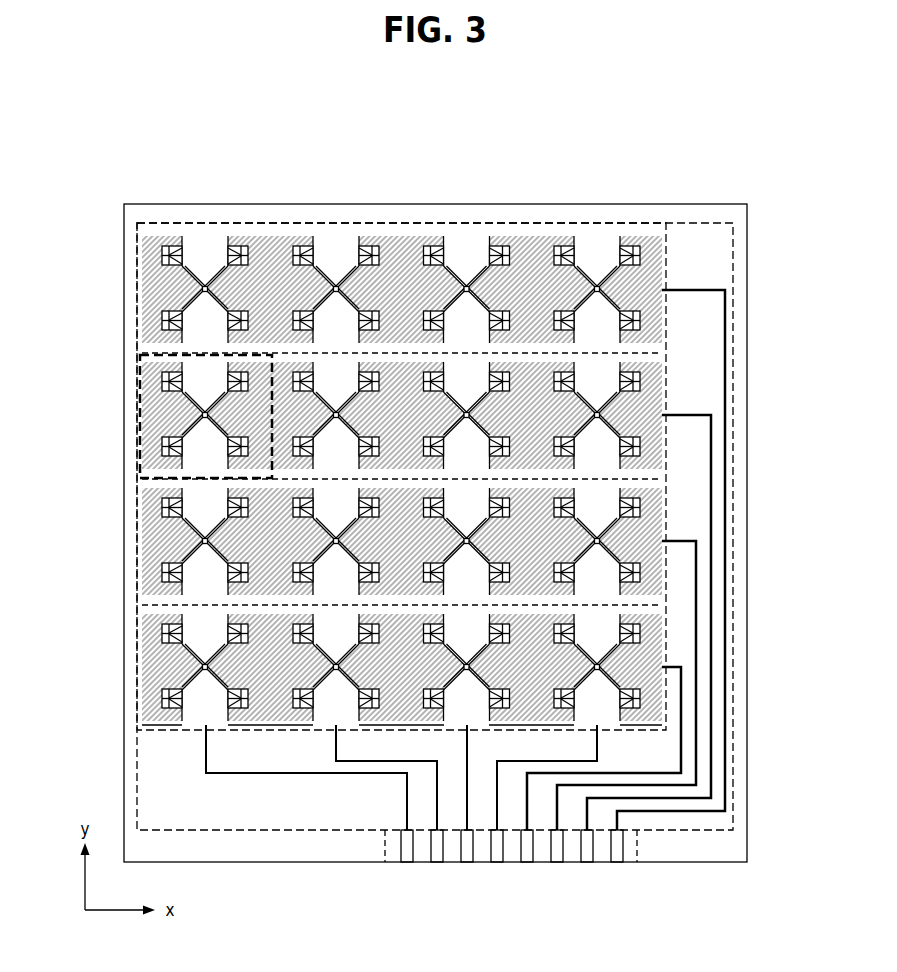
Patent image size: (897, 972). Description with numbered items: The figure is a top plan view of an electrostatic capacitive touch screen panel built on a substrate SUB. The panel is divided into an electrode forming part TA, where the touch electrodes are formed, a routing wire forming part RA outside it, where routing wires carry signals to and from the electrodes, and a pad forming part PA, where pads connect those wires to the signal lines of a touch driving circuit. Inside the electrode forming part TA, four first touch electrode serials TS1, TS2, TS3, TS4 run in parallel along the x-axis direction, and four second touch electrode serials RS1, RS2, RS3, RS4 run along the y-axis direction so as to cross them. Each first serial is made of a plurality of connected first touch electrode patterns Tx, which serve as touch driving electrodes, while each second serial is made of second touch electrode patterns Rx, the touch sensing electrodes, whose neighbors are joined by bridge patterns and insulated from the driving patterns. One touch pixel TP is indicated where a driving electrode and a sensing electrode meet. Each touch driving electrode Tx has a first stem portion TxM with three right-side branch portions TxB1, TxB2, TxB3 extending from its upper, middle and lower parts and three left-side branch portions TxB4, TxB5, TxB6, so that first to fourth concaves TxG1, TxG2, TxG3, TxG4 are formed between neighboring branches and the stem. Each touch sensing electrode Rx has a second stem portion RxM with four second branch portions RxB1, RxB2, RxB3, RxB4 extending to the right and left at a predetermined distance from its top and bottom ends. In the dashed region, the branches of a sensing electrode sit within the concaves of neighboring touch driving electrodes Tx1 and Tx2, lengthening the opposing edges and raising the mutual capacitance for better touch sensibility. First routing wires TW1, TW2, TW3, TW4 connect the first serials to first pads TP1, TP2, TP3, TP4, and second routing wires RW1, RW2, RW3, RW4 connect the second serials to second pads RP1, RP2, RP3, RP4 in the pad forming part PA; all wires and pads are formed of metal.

The substrate SUB is at (305, 863).
The routing wire forming part RA is at (707, 222).
The electrode forming part TA is at (660, 222).
The pad forming part PA is at (645, 848).
The first touch electrode pattern Tx is at (456, 397).
The second touch electrode pattern Rx is at (217, 237).
The first touch electrode serial TS1 is at (135, 266).
The first touch electrode serial TS2 is at (135, 377).
The first touch electrode serial TS3 is at (135, 521).
The first touch electrode serial TS4 is at (135, 643).
The second touch electrode serial RS1 is at (195, 222).
The second touch electrode serial RS2 is at (322, 222).
The second touch electrode serial RS3 is at (482, 222).
The second touch electrode serial RS4 is at (586, 222).
The touch pixel TP is at (556, 247).
The first stem portion TxM is at (402, 288).
The 1-1 branch portion TxB1 is at (438, 255).
The 1-2 branch portion TxB2 is at (466, 288).
The 1-3 branch portion TxB3 is at (440, 330).
The 1-4 branch portion TxB4 is at (364, 255).
The 1-5 branch portion TxB5 is at (358, 278).
The 1-6 branch portion TxB6 is at (358, 340).
The first concave TxG1 is at (632, 256).
The second concave TxG2 is at (632, 326).
The third concave TxG3 is at (502, 258).
The fourth concave TxG4 is at (502, 325).
The touch driving electrode Tx1 is at (206, 416).
The touch driving electrode Tx2 is at (257, 415).
The second stem portion RxM is at (203, 443).
The 2-1 branch portion RxB1 is at (237, 448).
The 2-2 branch portion RxB2 is at (233, 382).
The 2-3 branch portion RxB3 is at (178, 447).
The 2-4 branch portion RxB4 is at (178, 385).
The first routing wire TW1 is at (727, 392).
The first routing wire TW2 is at (712, 490).
The first routing wire TW3 is at (697, 585).
The first routing wire TW4 is at (682, 703).
The second routing wire RW1 is at (208, 752).
The second routing wire RW2 is at (338, 752).
The second routing wire RW3 is at (469, 752).
The second routing wire RW4 is at (599, 752).
The second pad RP1 is at (407, 863).
The second pad RP2 is at (437, 863).
The second pad RP3 is at (467, 863).
The second pad RP4 is at (497, 863).
The first pad TP1 is at (617, 863).
The first pad TP2 is at (587, 863).
The first pad TP3 is at (557, 863).
The first pad TP4 is at (527, 863).